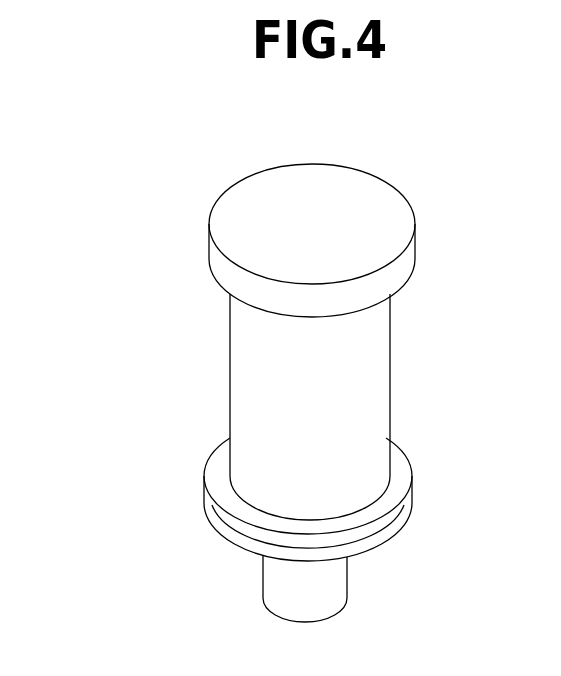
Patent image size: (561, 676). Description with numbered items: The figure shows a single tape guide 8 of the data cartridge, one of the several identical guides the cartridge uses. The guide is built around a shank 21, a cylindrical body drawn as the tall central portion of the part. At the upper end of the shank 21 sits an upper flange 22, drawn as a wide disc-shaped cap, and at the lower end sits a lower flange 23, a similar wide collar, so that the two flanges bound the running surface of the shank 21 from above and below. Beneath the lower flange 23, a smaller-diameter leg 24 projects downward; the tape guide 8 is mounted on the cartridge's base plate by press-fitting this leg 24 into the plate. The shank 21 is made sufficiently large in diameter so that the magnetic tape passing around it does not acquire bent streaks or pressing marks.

The tape guide 8 is at (180, 226).
The upper flange 22 is at (216, 262).
The shank 21 is at (243, 353).
The lower flange 23 is at (217, 480).
The leg 24 is at (273, 583).